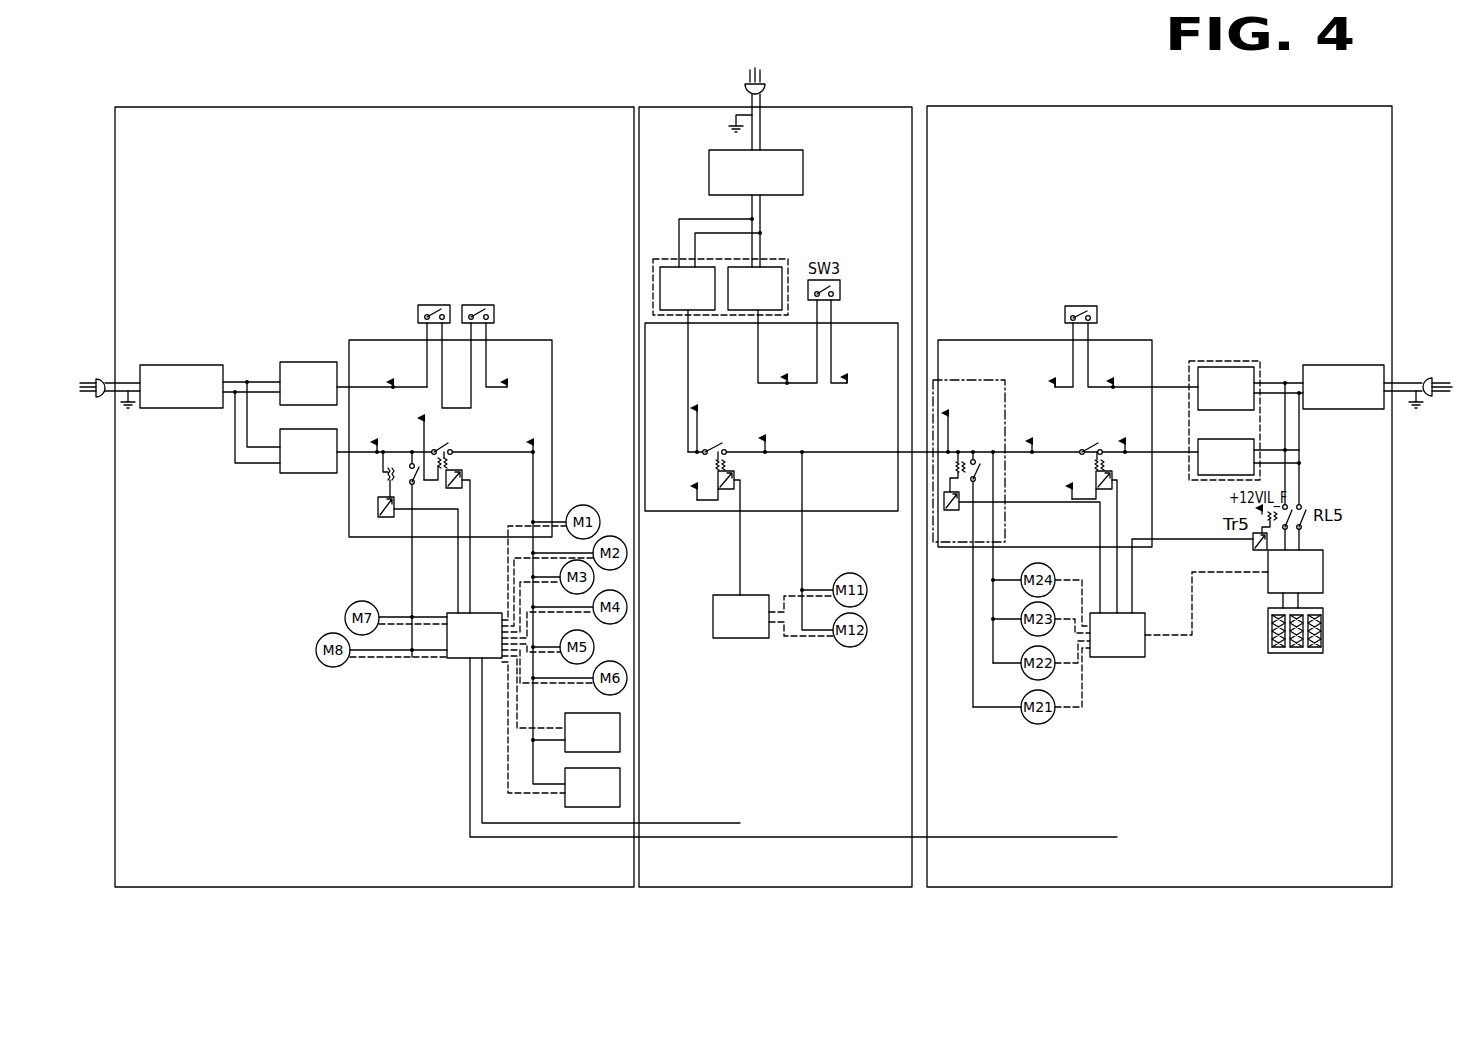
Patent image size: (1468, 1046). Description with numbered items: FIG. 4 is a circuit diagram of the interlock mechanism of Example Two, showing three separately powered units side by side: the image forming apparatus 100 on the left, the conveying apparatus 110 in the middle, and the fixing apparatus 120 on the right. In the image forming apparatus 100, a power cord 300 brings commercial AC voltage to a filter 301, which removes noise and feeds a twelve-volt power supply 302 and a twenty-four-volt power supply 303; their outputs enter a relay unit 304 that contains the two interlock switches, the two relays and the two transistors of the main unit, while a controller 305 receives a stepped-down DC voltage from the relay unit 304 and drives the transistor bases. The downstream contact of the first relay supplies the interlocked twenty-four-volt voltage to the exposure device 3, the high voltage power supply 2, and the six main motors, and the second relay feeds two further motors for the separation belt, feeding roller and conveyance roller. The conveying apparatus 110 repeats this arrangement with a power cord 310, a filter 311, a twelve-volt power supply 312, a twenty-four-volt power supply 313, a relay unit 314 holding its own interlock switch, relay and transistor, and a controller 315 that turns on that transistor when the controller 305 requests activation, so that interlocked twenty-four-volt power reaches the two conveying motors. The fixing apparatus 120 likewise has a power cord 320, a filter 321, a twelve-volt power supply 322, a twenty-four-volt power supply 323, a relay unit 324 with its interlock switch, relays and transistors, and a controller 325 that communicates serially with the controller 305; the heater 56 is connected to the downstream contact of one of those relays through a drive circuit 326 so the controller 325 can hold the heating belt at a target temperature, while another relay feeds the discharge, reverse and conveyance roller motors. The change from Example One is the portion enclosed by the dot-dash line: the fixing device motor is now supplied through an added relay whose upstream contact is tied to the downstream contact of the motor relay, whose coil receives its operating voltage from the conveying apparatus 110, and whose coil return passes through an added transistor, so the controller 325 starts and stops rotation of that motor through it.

The image forming apparatus 100 is at (440, 107).
The conveying apparatus 110 is at (655, 107).
The fixing apparatus 120 is at (985, 107).
The power cord 300 is at (102, 384).
The filter 301 is at (182, 365).
The 12 V power supply 302 is at (303, 362).
The 24 V power supply 303 is at (298, 476).
The relay unit 304 is at (368, 340).
The controller 305 is at (455, 613).
The exposure device 3 is at (565, 745).
The high voltage power supply 2 is at (565, 802).
The power cord 310 is at (770, 92).
The filter 311 is at (783, 150).
The 12 V power supply 312 is at (778, 264).
The 24 V power supply 313 is at (653, 262).
The relay unit 314 is at (855, 323).
The controller 315 is at (757, 640).
The power cord 320 is at (1432, 372).
The filter 321 is at (1350, 365).
The 12 V power supply 322 is at (1207, 362).
The 24 V power supply 323 is at (1262, 440).
The relay unit 324 is at (985, 340).
The controller 325 is at (1140, 658).
The drive circuit 326 is at (1268, 582).
The heater 56 is at (1310, 653).